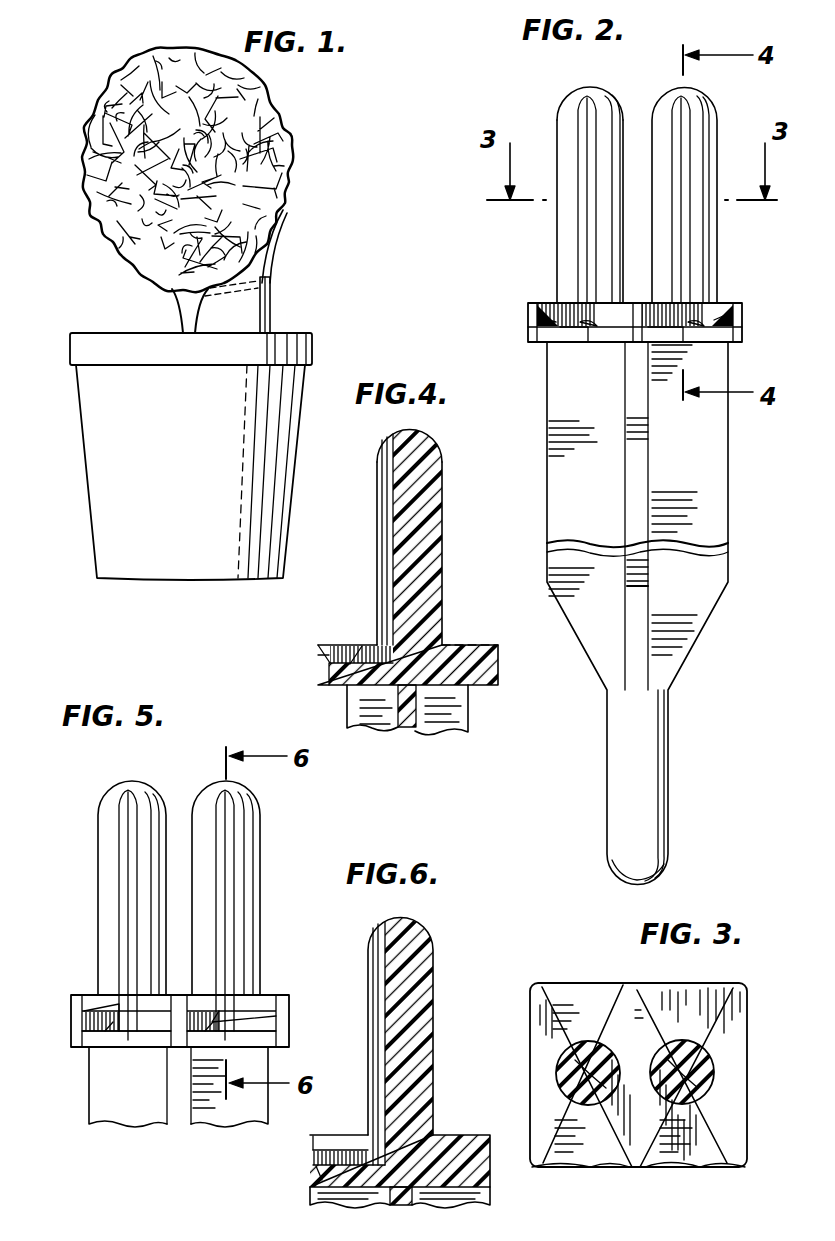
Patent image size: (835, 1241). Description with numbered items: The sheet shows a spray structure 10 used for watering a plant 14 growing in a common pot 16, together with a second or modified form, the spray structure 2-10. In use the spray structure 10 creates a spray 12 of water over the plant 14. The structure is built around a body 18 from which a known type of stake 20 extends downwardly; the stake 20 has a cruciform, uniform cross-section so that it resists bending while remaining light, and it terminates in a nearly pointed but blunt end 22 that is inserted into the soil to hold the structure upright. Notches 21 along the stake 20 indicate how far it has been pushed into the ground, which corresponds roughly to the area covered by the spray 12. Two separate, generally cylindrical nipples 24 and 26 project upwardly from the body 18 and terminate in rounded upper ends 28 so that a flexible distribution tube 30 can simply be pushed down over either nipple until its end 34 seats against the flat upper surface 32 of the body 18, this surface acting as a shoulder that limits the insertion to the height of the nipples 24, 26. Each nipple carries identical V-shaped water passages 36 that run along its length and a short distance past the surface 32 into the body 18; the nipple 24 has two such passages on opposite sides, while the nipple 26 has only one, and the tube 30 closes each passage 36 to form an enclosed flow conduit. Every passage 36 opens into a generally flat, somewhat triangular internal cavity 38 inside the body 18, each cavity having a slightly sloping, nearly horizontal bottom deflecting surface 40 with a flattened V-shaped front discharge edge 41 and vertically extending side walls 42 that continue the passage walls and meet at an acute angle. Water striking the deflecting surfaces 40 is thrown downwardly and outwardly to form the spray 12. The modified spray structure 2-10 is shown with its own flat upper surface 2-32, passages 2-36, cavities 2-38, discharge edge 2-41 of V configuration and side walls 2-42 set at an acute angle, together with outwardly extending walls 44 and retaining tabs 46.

In FIG. 1, the spray structure 10 is at (282, 287).
In FIG. 2, the spray structure 10 is at (505, 252).
In FIG. 1, the spray 12 is at (222, 291).
In FIG. 1, the plant 14 is at (134, 254).
In FIG. 1, the pot 16 is at (191, 456).
In FIG. 2, the body 18 is at (520, 301).
In FIG. 4, the body 18 is at (506, 692).
In FIG. 3, the body 18 is at (752, 1006).
In FIG. 2, the stake 20 is at (730, 538).
In FIG. 4, the stake 20 is at (450, 715).
In FIG. 2, the notches 21 is at (555, 522).
In FIG. 2, the blunt end 22 is at (655, 876).
In FIG. 2, the nipple 24 is at (605, 140).
In FIG. 3, the nipple 24 is at (563, 1067).
In FIG. 2, the nipple 26 is at (712, 148).
In FIG. 4, the nipple 26 is at (431, 527).
In FIG. 3, the nipple 26 is at (683, 1057).
In FIG. 2, the rounded upper ends 28 is at (604, 138).
In FIG. 4, the rounded upper ends 28 is at (403, 432).
In FIG. 1, the distribution tube 30 is at (286, 226).
In FIG. 2, the flat upper surface 32 is at (727, 303).
In FIG. 4, the flat upper surface 32 is at (463, 646).
In FIG. 3, the flat upper surface 32 is at (638, 1075).
In FIG. 1, the end of tube 34 is at (268, 281).
In FIG. 2, the water passages 36 is at (586, 183).
In FIG. 4, the water passages 36 is at (388, 505).
In FIG. 3, the water passages 36 is at (580, 1040).
In FIG. 2, the internal cavity 38 is at (540, 318).
In FIG. 4, the internal cavity 38 is at (356, 636).
In FIG. 2, the bottom deflecting surface 40 is at (680, 322).
In FIG. 4, the bottom deflecting surface 40 is at (337, 661).
In FIG. 3, the bottom deflecting surface 40 is at (628, 1075).
In FIG. 2, the front discharge edge 41 is at (575, 335).
In FIG. 4, the front discharge edge 41 is at (318, 654).
In FIG. 3, the front discharge edge 41 is at (577, 993).
In FIG. 4, the side walls 42 is at (338, 647).
In FIG. 3, the side walls 42 is at (562, 997).
In FIG. 5, the walls 44 is at (141, 1004).
In FIG. 6, the walls 44 is at (315, 1142).
In FIG. 5, the locking tab 46 is at (118, 1036).
In FIG. 5, the spray structure 2-10 is at (278, 842).
In FIG. 6, the spray structure 2-10 is at (444, 948).
In FIG. 5, the flange plate (second embodiment) 2-32 is at (87, 995).
In FIG. 6, the flange plate (second embodiment) 2-32 is at (353, 1135).
In FIG. 5, the longitudinal groove (second embodiment) 2-36 is at (223, 872).
In FIG. 6, the longitudinal groove (second embodiment) 2-36 is at (373, 1052).
In FIG. 5, the opening in flange (second embodiment) 2-38 is at (192, 1072).
In FIG. 6, the opening in flange (second embodiment) 2-38 is at (317, 1177).
In FIG. 5, the front discharge edge 2-41 is at (110, 1051).
In FIG. 5, the side walls 2-42 is at (107, 1038).
In FIG. 6, the side walls 2-42 is at (315, 1162).